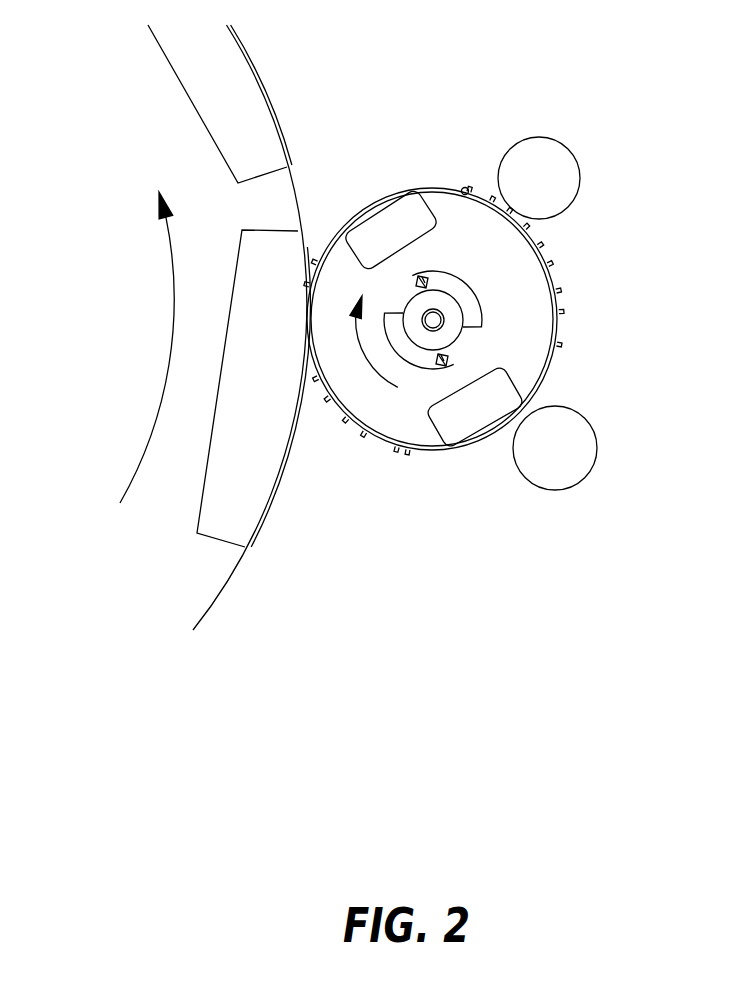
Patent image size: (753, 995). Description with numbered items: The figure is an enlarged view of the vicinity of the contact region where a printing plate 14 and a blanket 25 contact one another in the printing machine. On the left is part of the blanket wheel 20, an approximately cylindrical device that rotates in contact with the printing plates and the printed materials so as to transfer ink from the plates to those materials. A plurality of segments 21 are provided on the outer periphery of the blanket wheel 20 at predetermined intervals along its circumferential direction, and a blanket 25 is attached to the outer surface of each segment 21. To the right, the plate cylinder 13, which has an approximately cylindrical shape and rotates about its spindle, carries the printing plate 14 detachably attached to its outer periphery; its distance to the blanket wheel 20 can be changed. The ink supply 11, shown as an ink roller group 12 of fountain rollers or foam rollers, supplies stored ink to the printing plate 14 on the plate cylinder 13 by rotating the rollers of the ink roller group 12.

The blanket wheel 20 is at (71, 323).
The segment 21 is at (280, 163).
The blanket 25 is at (273, 110).
The plate cylinder 13 is at (522, 283).
The printing plate 14 is at (417, 452).
The ink roller group 12 is at (575, 182).
The ink supply 11 is at (593, 313).